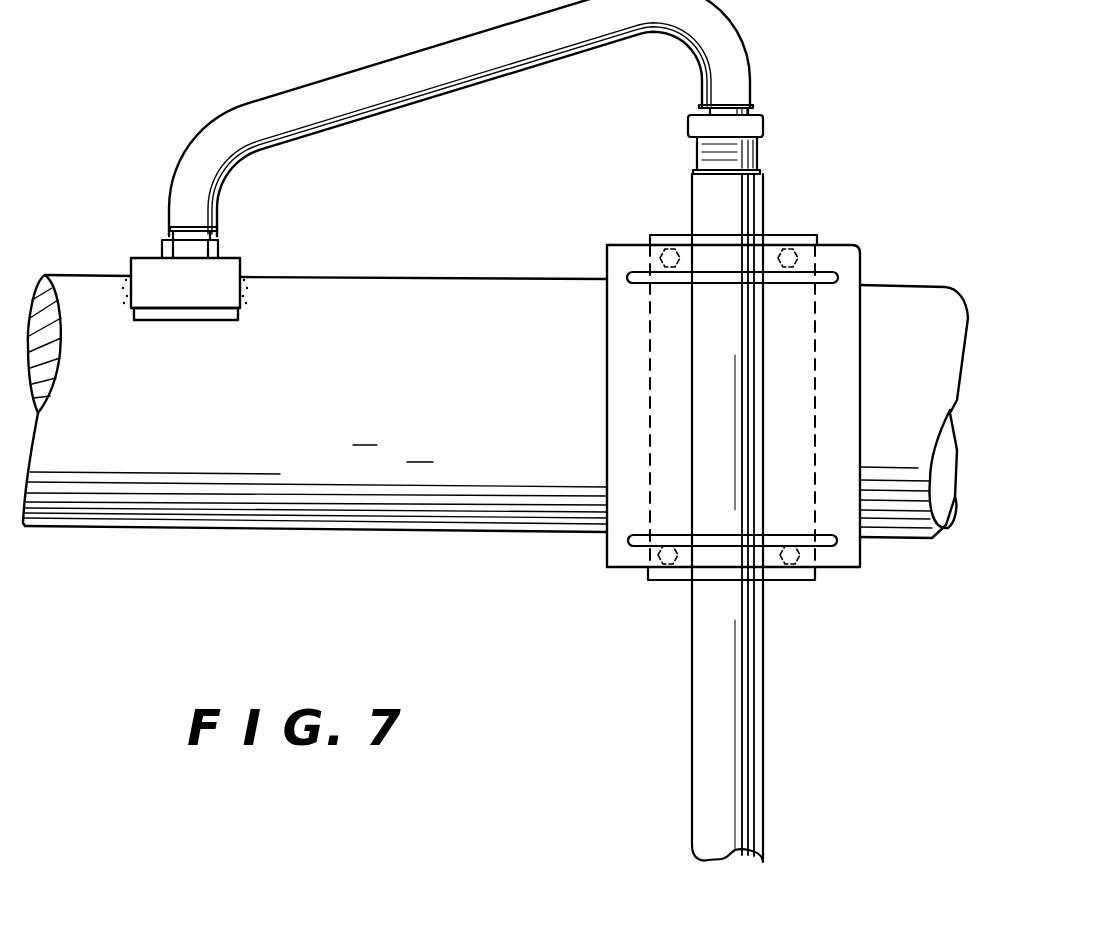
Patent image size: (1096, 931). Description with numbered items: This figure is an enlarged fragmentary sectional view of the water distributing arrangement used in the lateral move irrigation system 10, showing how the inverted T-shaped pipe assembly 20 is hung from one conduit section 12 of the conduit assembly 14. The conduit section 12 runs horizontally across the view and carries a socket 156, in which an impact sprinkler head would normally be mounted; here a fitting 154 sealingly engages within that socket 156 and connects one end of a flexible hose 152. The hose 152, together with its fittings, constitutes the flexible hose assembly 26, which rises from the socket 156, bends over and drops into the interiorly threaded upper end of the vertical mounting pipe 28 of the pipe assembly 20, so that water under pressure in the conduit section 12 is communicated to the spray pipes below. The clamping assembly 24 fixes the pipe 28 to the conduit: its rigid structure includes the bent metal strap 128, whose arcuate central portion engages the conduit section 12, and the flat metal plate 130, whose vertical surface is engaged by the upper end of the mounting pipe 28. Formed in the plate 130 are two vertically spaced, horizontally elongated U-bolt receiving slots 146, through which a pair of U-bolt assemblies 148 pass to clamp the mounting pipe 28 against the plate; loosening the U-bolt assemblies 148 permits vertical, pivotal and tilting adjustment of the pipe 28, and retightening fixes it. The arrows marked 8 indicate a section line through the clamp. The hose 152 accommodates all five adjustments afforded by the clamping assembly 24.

The section line 8- 8 is at (575, 205).
The lateral move agricultural irrigation system 10 is at (163, 122).
The conduit section 12 is at (285, 534).
The conduit assembly 14 is at (466, 266).
The inverted T-shaped pipe assembly 20 is at (776, 727).
The clamping assembly 24 is at (885, 187).
The flexible hose assembly 26 is at (459, 118).
The vertical mounting pipe 28 is at (705, 720).
The bent metal strap 128 is at (672, 234).
The flat metal plate 130 is at (607, 378).
The U-bolt receiving slots 146 is at (645, 284).
The U-bolt assemblies 148 is at (724, 280).
The flexible hose 152 is at (487, 88).
The fitting 154 is at (165, 246).
The socket 156 is at (230, 290).